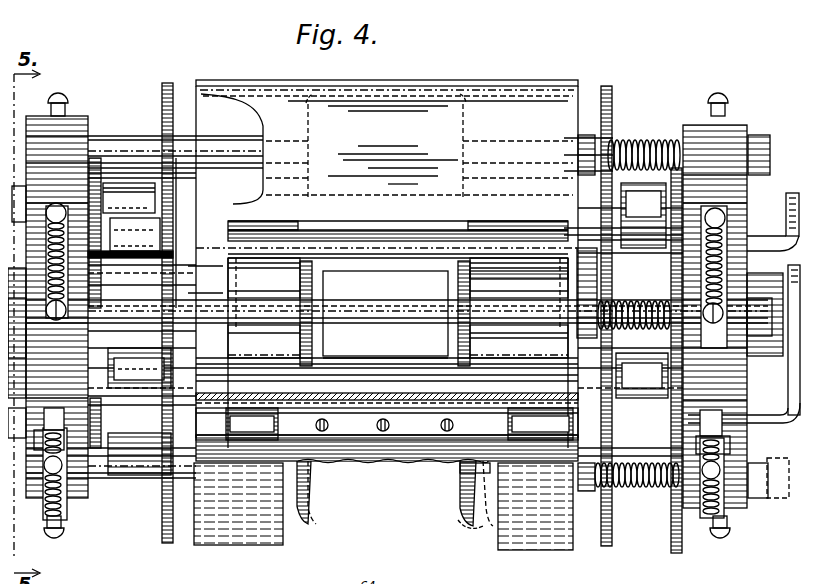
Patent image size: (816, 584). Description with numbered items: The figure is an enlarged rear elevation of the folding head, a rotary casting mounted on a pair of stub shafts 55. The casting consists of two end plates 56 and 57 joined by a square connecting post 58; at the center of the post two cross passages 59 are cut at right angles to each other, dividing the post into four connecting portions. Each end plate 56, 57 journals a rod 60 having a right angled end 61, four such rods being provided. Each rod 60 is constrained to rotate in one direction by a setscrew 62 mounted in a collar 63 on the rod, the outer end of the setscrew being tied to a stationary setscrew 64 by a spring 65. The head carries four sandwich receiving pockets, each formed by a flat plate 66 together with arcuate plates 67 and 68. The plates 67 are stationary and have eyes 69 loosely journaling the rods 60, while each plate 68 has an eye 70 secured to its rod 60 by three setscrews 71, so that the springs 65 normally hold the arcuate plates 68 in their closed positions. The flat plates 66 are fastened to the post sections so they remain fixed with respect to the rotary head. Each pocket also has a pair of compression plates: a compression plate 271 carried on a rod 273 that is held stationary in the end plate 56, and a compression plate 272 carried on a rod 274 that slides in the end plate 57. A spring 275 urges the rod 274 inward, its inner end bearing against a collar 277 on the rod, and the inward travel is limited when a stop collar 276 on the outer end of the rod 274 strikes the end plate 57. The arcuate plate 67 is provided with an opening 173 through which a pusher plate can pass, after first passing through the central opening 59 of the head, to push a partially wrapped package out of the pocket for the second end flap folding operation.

The stub shaft 55 is at (10, 325).
The end plate 56 is at (76, 112).
The end plate 57 is at (726, 120).
The square connecting post 58 is at (390, 293).
The cross passage 59 is at (348, 350).
The rod 60 is at (177, 230).
The right angled end 61 is at (778, 232).
The setscrew 62 is at (54, 435).
The collar 63 is at (40, 232).
The stationary setscrew 64 is at (52, 95).
The spring 65 is at (60, 278).
The flat plate 66 is at (240, 72).
The arcuate plate 67 is at (350, 462).
The arcuate plate 68 is at (194, 90).
The eye 69 is at (272, 217).
The eye 70 is at (400, 218).
The setscrew 71 is at (462, 378).
The opening 173 is at (410, 350).
The compression plate 271 is at (305, 114).
The compression plate 272 is at (452, 114).
The rod 273 is at (226, 130).
The rod 274 is at (507, 130).
The spring 275 is at (632, 132).
The stop collar 276 is at (752, 136).
The collar 277 is at (590, 128).